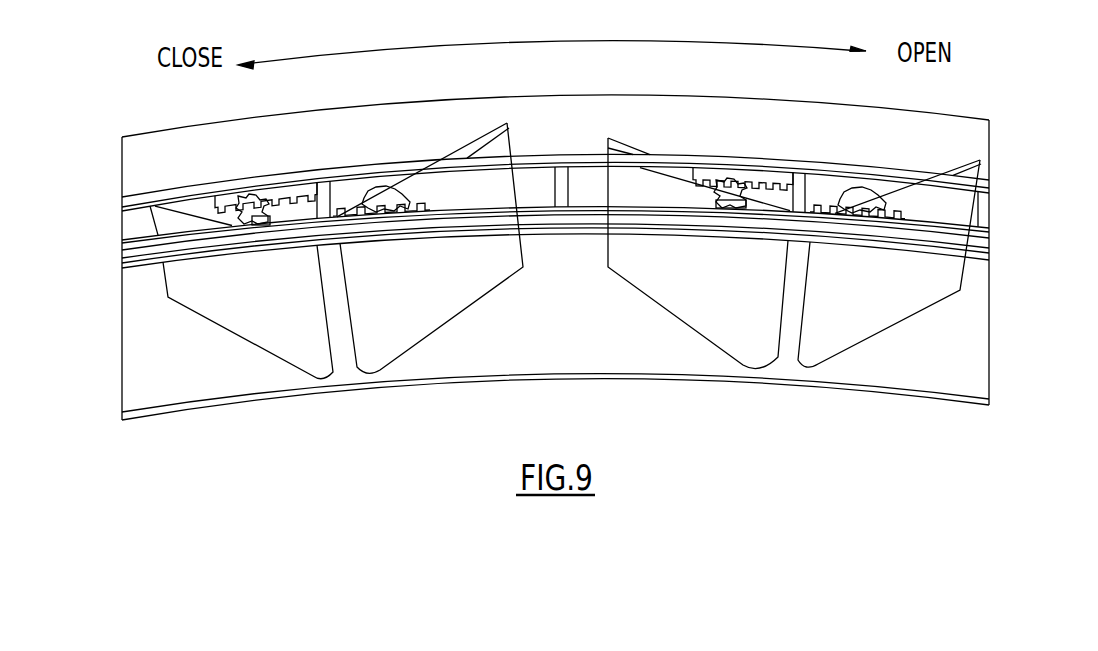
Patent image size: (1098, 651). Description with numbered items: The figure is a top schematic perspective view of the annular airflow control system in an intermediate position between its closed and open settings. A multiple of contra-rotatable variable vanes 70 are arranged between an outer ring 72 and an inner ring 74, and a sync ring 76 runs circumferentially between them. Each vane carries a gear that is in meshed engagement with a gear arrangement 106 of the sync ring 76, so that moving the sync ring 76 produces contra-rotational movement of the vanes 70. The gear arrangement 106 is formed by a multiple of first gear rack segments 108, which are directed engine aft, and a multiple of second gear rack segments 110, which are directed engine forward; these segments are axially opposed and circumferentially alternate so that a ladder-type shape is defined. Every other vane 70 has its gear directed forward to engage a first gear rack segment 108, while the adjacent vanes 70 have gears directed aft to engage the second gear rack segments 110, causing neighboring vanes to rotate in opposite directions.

The contra-rotatable variable vane 70 is at (860, 327).
The outer ring 72 is at (973, 142).
The inner ring 74 is at (965, 377).
The sync ring 76 is at (996, 208).
The gear arrangement 106 is at (797, 177).
The first gear rack segment 108 is at (397, 213).
The second gear rack segment 110 is at (240, 184).